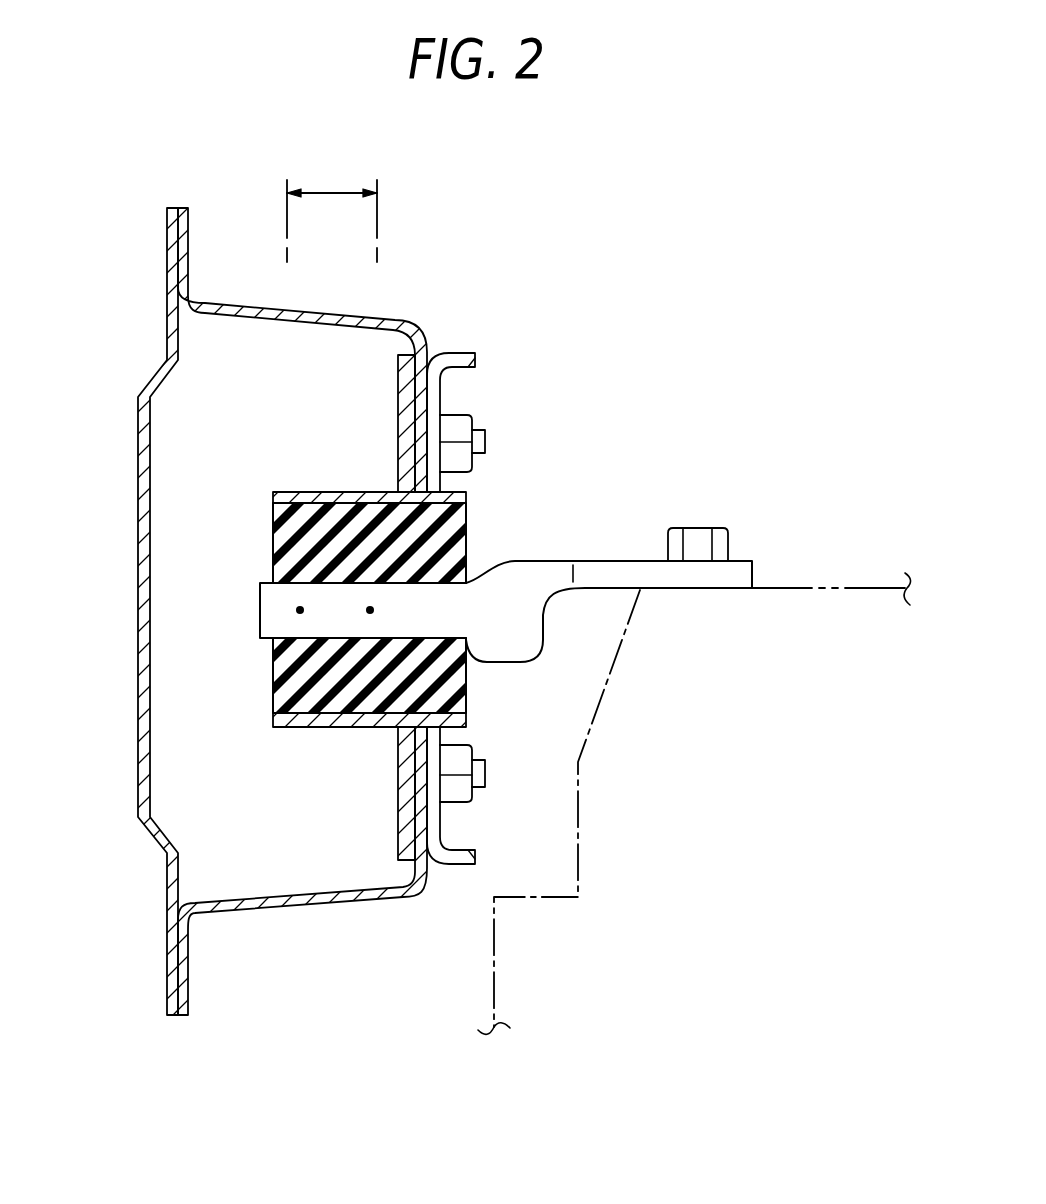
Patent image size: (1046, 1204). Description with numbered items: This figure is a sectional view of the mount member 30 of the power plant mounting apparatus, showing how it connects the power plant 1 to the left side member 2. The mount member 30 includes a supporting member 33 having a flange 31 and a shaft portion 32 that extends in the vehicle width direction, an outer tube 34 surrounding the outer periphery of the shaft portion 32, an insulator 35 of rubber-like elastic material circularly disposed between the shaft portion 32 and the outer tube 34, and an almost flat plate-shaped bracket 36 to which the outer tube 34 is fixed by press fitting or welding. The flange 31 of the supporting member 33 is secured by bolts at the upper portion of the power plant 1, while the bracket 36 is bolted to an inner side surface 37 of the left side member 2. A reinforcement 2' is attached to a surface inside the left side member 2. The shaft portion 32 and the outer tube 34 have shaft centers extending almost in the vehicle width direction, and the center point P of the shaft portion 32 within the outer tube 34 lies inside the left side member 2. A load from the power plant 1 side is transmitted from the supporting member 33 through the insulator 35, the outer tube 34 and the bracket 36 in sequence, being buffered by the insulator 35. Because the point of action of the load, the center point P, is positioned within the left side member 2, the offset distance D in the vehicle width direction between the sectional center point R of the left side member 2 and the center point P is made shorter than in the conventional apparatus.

The power plant 1 is at (868, 586).
The left side member 2 is at (224, 611).
The reinforcement 2' is at (379, 607).
The mount member 30 is at (485, 579).
The flange 31 is at (740, 560).
The shaft portion 32 is at (267, 628).
The supporting member 33 is at (604, 551).
The outer tube 34 is at (292, 493).
The insulator 35 is at (280, 697).
The bracket 36 is at (440, 388).
The inner side surface 37 is at (440, 487).
The sectional center point R is at (300, 610).
The center point P is at (370, 610).
The offset distance D is at (332, 212).